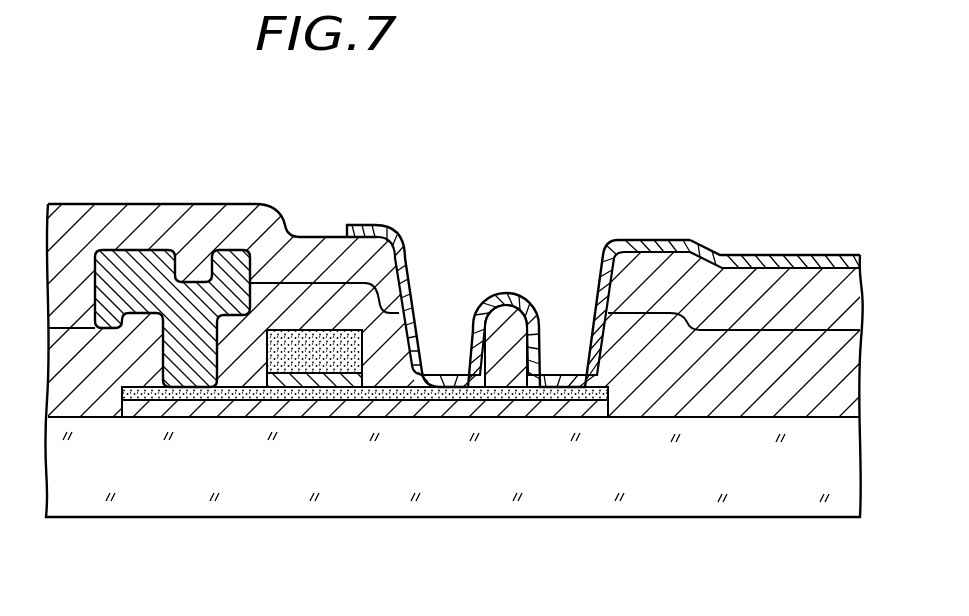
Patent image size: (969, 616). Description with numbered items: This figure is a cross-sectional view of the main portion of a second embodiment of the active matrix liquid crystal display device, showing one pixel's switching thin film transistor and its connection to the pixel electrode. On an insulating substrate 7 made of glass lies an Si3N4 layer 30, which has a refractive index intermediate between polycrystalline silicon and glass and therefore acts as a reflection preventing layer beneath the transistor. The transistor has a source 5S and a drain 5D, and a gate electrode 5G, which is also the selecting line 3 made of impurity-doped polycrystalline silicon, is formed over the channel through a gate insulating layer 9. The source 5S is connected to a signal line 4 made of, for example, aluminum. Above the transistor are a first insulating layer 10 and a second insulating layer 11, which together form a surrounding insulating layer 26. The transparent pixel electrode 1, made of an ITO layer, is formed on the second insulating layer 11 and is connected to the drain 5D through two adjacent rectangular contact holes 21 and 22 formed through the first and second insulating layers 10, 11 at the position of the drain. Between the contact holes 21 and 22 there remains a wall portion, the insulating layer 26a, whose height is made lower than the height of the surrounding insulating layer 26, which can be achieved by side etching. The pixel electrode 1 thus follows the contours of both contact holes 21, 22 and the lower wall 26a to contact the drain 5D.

The transparent pixel electrode 1 is at (778, 262).
The selecting line 3 is at (313, 251).
The signal line 4 is at (147, 257).
The gate electrode 5G is at (318, 345).
The source 5S is at (212, 398).
The drain 5D is at (513, 377).
The insulating substrate 7 is at (810, 488).
The gate insulating layer 9 is at (292, 400).
The first insulating layer 10 is at (708, 412).
The second insulating layer 11 is at (763, 310).
The contact hole 21 is at (468, 347).
The contact hole 22 is at (592, 330).
The surrounding insulating layer 26 is at (734, 453).
The insulating layer between the contact holes 26a is at (518, 395).
The Si3N4 layer 30 is at (430, 403).